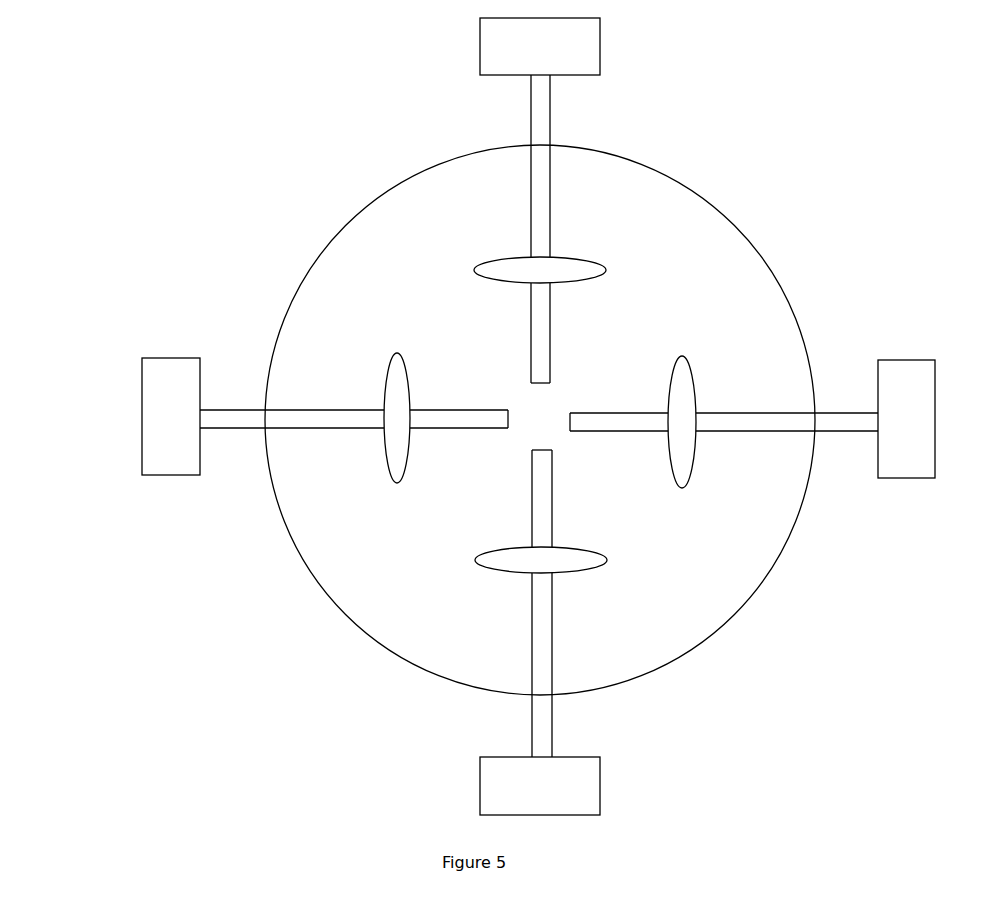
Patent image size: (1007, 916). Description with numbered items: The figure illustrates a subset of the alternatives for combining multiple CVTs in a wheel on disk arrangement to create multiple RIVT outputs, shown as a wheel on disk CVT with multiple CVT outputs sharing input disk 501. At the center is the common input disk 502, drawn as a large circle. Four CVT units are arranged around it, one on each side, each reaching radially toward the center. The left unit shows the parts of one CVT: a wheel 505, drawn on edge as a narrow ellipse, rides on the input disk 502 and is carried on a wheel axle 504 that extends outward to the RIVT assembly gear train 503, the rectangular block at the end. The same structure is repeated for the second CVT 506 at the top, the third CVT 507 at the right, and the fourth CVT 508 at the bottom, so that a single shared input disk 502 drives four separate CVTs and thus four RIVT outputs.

The wheel on disk CVT with multiple CVT outputs sharing input disk 501 is at (52, 38).
The input disk 502 is at (340, 225).
The RIVT assembly gear train 503 is at (137, 415).
The wheel axle 504 is at (235, 435).
The wheel 505 is at (393, 480).
The second CVT 506 is at (562, 100).
The third CVT 507 is at (907, 342).
The fourth CVT 508 is at (563, 726).